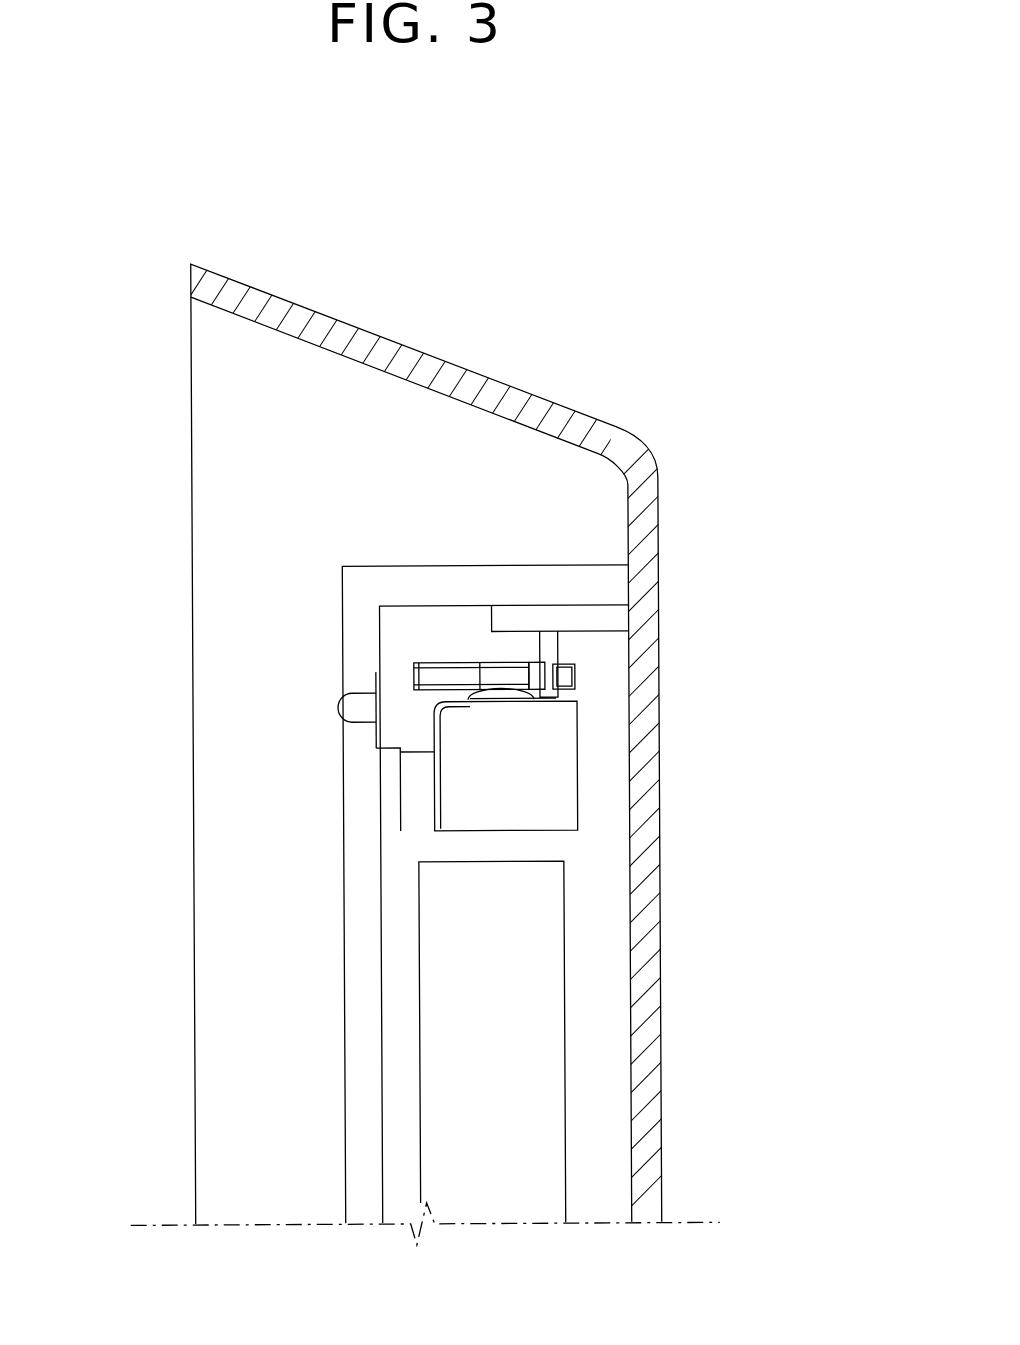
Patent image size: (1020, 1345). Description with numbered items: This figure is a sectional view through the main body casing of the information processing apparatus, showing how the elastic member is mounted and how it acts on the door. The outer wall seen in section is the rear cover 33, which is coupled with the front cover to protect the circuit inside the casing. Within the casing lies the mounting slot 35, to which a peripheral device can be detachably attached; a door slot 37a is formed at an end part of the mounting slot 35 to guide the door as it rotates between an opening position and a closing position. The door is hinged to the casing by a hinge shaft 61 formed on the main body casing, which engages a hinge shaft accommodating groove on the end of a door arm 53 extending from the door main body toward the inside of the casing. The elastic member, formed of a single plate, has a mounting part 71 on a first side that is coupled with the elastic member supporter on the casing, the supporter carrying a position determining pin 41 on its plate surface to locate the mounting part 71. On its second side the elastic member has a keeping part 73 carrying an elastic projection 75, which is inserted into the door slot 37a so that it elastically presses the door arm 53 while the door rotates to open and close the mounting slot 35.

The rear cover 33 is at (193, 982).
The mounting slot 35 is at (420, 1133).
The door slot 37a is at (541, 663).
The position determining pin 41 is at (345, 709).
The door arm 53 is at (566, 674).
The hinge shaft 61 is at (552, 643).
The mounting part 71 is at (407, 805).
The keeping part 73 is at (466, 698).
The elastic projection 75 is at (507, 697).